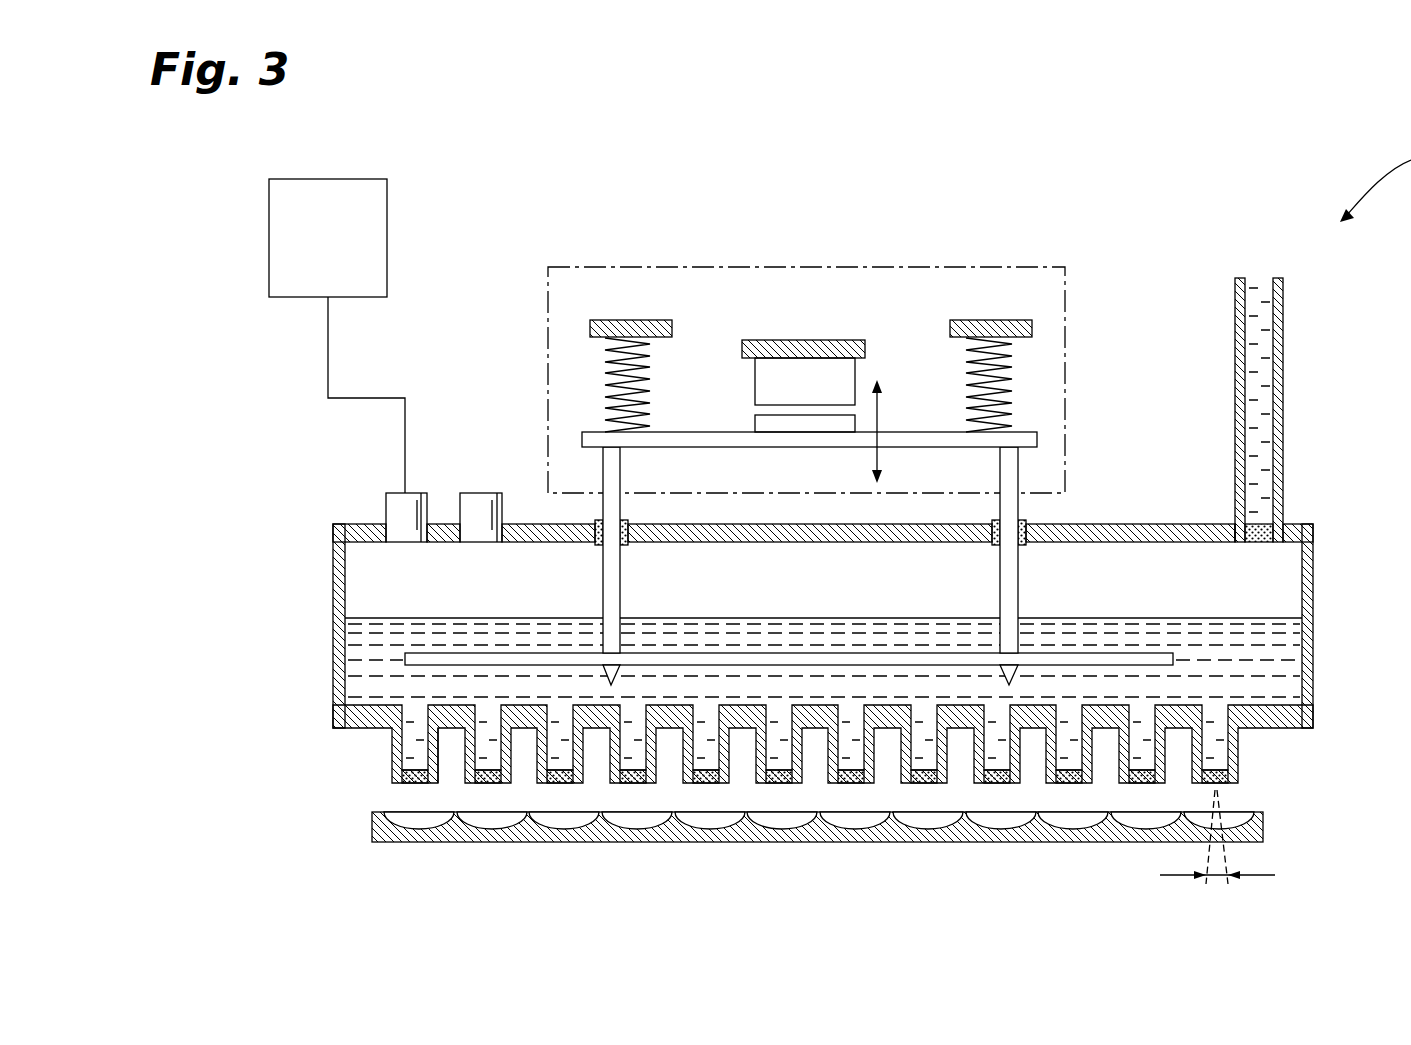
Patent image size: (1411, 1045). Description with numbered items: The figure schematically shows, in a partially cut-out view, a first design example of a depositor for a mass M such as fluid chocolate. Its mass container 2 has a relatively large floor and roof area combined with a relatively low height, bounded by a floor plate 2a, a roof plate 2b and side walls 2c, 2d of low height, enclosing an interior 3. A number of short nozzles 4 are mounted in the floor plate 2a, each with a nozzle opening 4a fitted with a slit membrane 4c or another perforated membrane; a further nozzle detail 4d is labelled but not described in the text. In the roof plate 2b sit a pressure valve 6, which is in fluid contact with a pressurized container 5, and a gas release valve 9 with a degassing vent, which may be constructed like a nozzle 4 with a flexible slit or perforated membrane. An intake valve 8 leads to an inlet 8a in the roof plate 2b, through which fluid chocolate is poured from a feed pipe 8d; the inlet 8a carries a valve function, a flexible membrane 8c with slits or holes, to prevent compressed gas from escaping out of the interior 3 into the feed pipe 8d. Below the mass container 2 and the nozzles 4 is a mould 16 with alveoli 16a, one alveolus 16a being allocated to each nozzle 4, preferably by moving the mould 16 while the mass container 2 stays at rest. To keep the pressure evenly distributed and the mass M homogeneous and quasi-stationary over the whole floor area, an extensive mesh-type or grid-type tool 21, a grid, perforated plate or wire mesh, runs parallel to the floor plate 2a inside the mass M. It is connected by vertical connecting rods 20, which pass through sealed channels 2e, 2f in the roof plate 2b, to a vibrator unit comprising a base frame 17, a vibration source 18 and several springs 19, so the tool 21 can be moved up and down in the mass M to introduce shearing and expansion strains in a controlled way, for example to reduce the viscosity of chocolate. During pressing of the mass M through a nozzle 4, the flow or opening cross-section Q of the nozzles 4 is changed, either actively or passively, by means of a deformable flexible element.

The mass container 2 is at (816, 614).
The floor plate 2a is at (1280, 730).
The roof plate 2b is at (540, 526).
The side wall 2c is at (345, 670).
The side wall 2d is at (1313, 565).
The sealed channel 2e is at (630, 530).
The sealed channel 2f is at (1028, 528).
The interior 3 is at (455, 595).
The nozzle 4 is at (380, 750).
The nozzle opening 4a is at (424, 778).
The slit membrane 4c is at (440, 768).
The fin bottom 4d is at (406, 775).
The pressurized container 5 is at (352, 238).
The pressure valve 6 is at (397, 507).
The intake valve 8 is at (1272, 444).
The inlet 8a is at (1256, 548).
The flexible membrane 8c is at (1237, 516).
The feed pipe 8d is at (1283, 335).
The gas release valve 9 is at (483, 512).
The mould 16 is at (812, 842).
The alveolus 16a is at (1003, 842).
The base frame 17 is at (910, 432).
The vibration source 18 is at (818, 388).
The spring 19 is at (650, 395).
The vertical connecting rod 20 is at (603, 587).
The mesh-type or grid-type tool 21 is at (767, 653).
The mass M is at (1272, 676).
The opening cross-section Q is at (1217, 851).